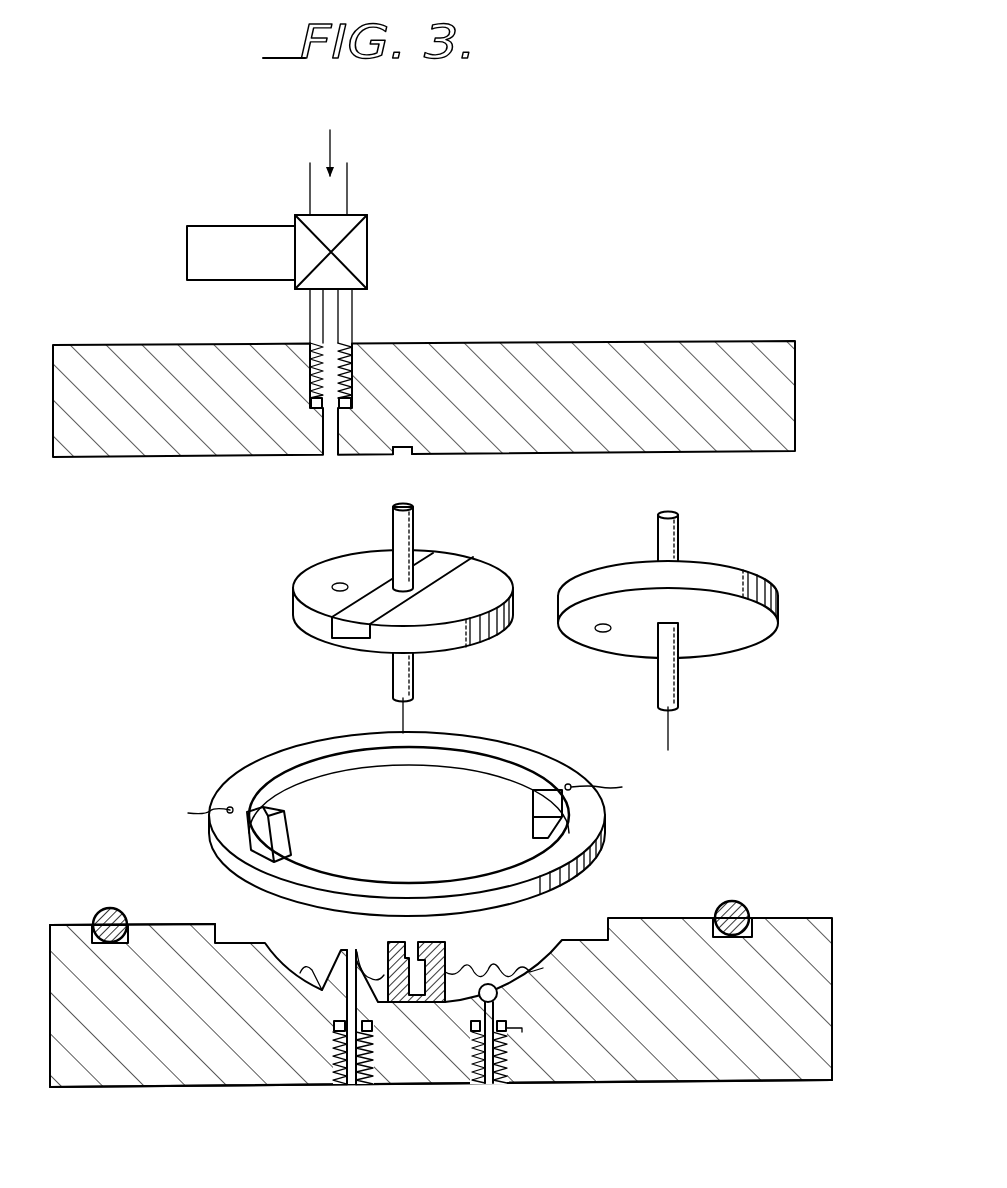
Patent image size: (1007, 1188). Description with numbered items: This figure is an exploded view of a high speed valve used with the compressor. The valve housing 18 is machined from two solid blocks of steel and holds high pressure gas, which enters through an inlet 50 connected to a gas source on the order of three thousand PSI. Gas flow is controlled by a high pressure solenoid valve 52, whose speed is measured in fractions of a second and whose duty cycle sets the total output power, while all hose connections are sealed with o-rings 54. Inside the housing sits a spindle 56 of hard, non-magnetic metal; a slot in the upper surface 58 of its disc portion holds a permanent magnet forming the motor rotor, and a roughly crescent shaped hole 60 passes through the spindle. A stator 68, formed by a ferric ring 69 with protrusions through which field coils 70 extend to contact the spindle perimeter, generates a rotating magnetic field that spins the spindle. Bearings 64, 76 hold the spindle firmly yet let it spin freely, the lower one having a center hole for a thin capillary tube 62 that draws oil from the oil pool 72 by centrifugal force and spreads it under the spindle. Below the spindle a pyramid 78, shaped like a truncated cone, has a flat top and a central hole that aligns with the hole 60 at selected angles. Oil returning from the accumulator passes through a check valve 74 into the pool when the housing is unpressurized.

The valve housing 18 is at (133, 417).
The inlet 50 is at (347, 170).
The high pressure solenoid valve 52 is at (368, 247).
The o-rings 54 is at (352, 405).
The bearing 64 is at (415, 442).
The spindle 56 is at (540, 627).
The upper surface 58 is at (493, 572).
The hole 60 is at (340, 583).
The capillary tube 62 is at (403, 713).
The stator 68 is at (440, 824).
The ferric ring 69 is at (570, 785).
The field coils 70 is at (291, 822).
The oil pool 72 is at (486, 961).
The check valve 74 is at (497, 996).
The bearing 76 is at (445, 942).
The pyramid 78 is at (333, 952).